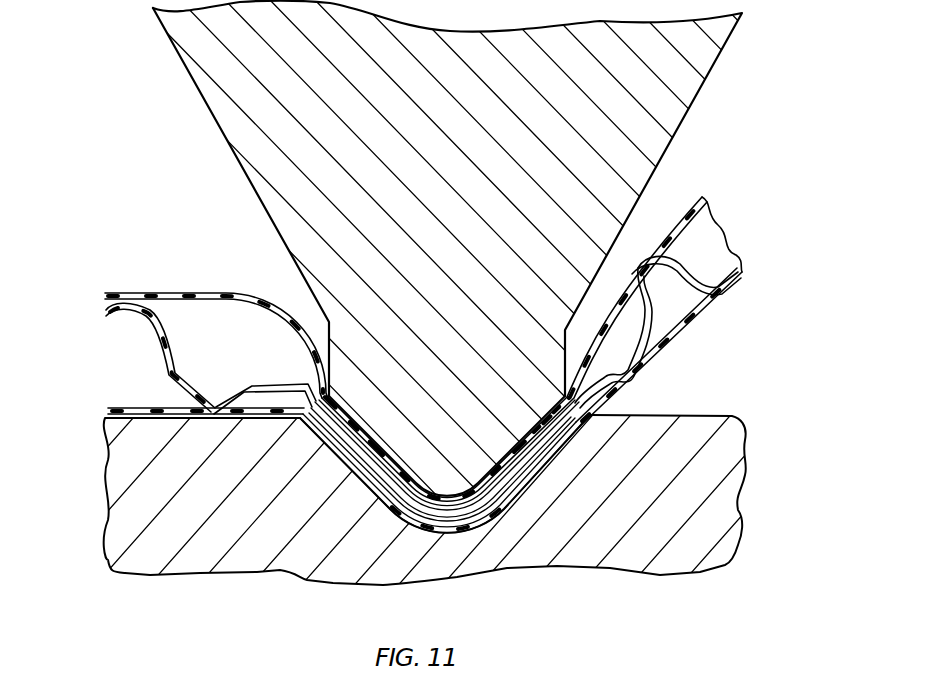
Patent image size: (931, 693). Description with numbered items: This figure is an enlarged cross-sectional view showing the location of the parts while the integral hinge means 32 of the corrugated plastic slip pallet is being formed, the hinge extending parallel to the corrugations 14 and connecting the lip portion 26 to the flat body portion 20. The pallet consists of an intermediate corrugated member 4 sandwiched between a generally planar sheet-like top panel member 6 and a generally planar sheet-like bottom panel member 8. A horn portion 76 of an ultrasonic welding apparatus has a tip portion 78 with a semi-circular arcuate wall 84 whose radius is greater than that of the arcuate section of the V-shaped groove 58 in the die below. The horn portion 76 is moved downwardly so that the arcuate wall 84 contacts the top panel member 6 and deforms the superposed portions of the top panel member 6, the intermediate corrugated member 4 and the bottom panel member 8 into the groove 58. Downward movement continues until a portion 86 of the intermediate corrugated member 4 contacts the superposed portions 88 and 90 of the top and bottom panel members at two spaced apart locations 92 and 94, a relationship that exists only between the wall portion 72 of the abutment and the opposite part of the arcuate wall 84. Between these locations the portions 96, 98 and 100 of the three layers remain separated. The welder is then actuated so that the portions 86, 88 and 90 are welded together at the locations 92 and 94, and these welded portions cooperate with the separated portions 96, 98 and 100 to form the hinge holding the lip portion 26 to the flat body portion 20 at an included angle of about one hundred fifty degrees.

The intermediate corrugated member 4 is at (166, 386).
The top panel member 6 is at (197, 291).
The bottom panel member 8 is at (216, 425).
The corrugations 14 is at (158, 328).
The flat body portion 20 is at (147, 283).
The lip portion 26 is at (722, 318).
The hinge means 32 is at (310, 518).
The V-shaped groove 58 is at (326, 473).
The wall portion 72 is at (618, 430).
The horn portion 76 is at (232, 119).
The tip portion 78 is at (447, 378).
The arcuate wall 84 is at (444, 503).
The portion of the intermediate corrugated member 86 is at (352, 483).
The superposed portion of the top panel member 88 is at (336, 442).
The superposed portion of the bottom panel member 90 is at (353, 522).
The spaced apart location 92 is at (372, 440).
The spaced apart location 94 is at (518, 425).
The portion of the intermediate corrugated member 96 is at (400, 540).
The portion of the top panel member 98 is at (380, 485).
The portion of the bottom panel member 100 is at (468, 522).